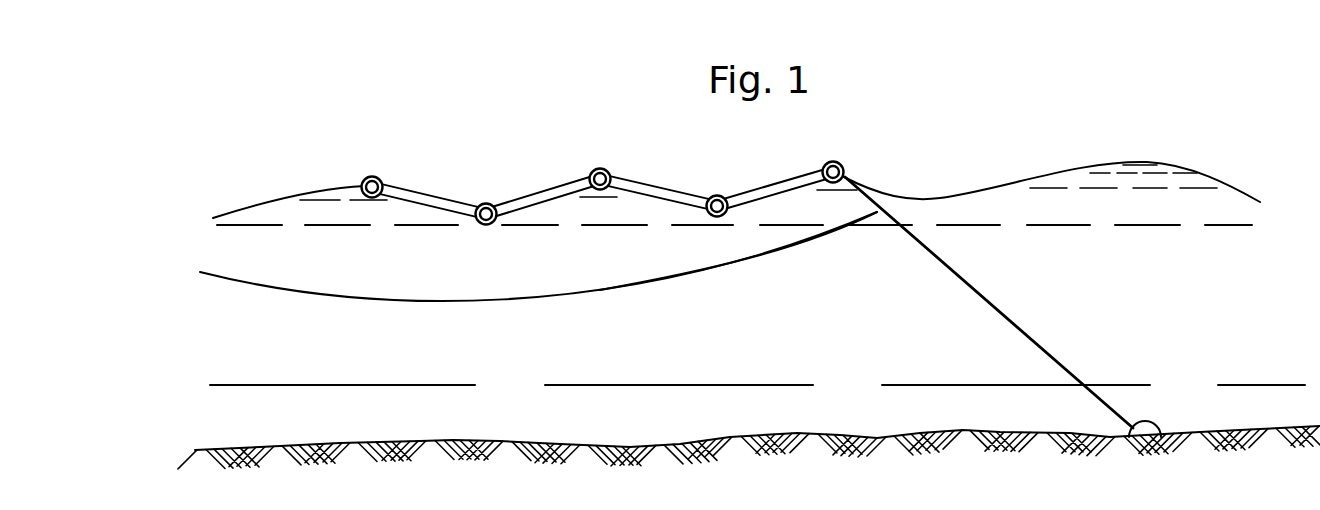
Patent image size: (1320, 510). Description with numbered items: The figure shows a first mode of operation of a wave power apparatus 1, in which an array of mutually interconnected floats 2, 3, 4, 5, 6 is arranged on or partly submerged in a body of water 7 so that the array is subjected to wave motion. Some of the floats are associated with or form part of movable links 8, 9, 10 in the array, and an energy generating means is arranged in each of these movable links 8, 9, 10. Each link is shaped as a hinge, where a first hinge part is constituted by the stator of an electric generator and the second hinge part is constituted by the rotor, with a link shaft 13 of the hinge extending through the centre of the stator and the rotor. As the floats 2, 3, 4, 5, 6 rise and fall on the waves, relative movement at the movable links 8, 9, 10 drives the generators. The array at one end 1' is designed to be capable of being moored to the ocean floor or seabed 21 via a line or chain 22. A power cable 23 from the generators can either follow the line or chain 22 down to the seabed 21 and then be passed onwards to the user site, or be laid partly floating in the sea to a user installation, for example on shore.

The wave power apparatus 1 is at (538, 265).
The end of the array 1' is at (736, 169).
The float 2 is at (834, 161).
The float 3 is at (716, 195).
The float 4 is at (600, 168).
The float 5 is at (483, 205).
The float 6 is at (362, 177).
The body of water 7 is at (849, 329).
The movable link 8 is at (725, 224).
The movable link 9 is at (604, 206).
The movable link 10 is at (482, 233).
The link shaft 13 is at (593, 173).
The seabed 21 is at (630, 440).
The line or chain 22 is at (1000, 312).
The power cable 23 is at (708, 270).